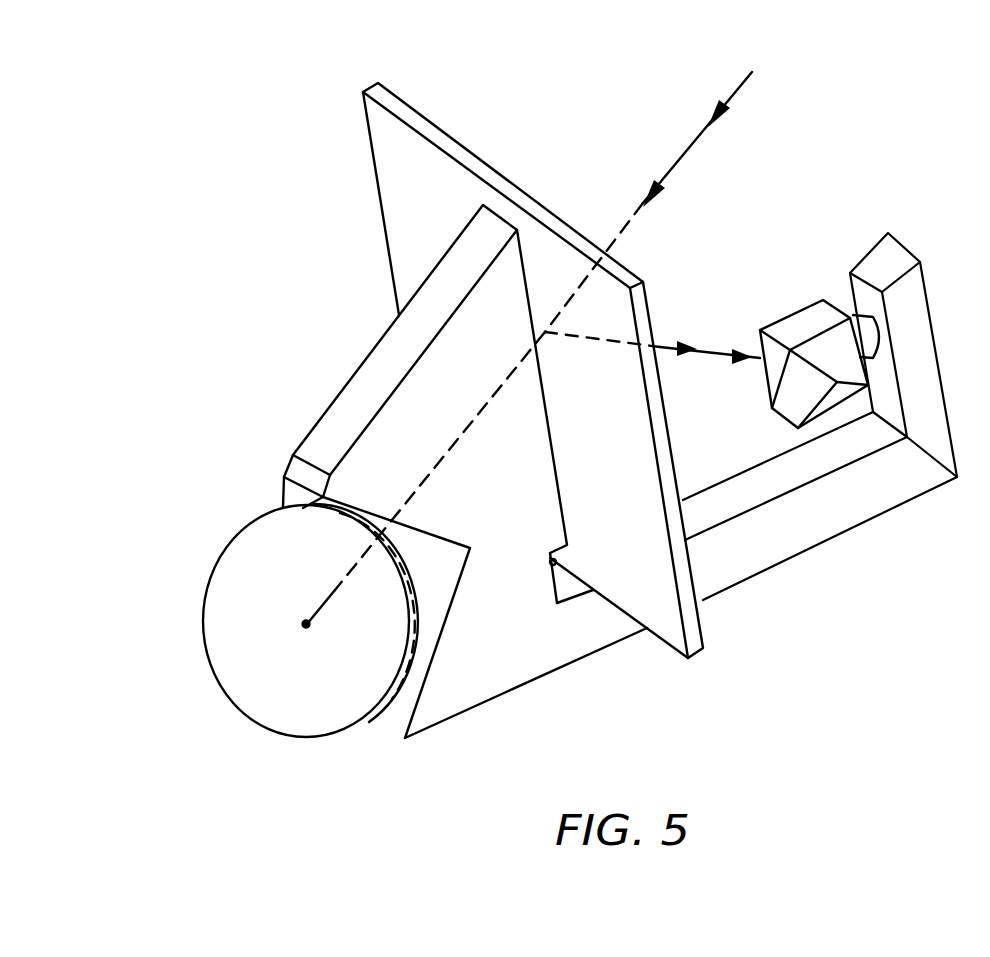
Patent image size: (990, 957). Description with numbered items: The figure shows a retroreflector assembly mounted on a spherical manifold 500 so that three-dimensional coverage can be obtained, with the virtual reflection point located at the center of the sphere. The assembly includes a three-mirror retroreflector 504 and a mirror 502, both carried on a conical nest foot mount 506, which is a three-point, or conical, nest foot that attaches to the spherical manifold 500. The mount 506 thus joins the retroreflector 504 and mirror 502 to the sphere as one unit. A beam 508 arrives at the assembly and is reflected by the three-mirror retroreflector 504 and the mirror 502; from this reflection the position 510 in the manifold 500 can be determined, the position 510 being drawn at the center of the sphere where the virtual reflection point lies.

The spherical manifold 500 is at (300, 738).
The mirror 502 is at (445, 130).
The three-mirror retroreflector 504 is at (783, 313).
The conical nest foot mount 506 is at (580, 660).
The beam 508 is at (685, 152).
The position 510 is at (304, 622).